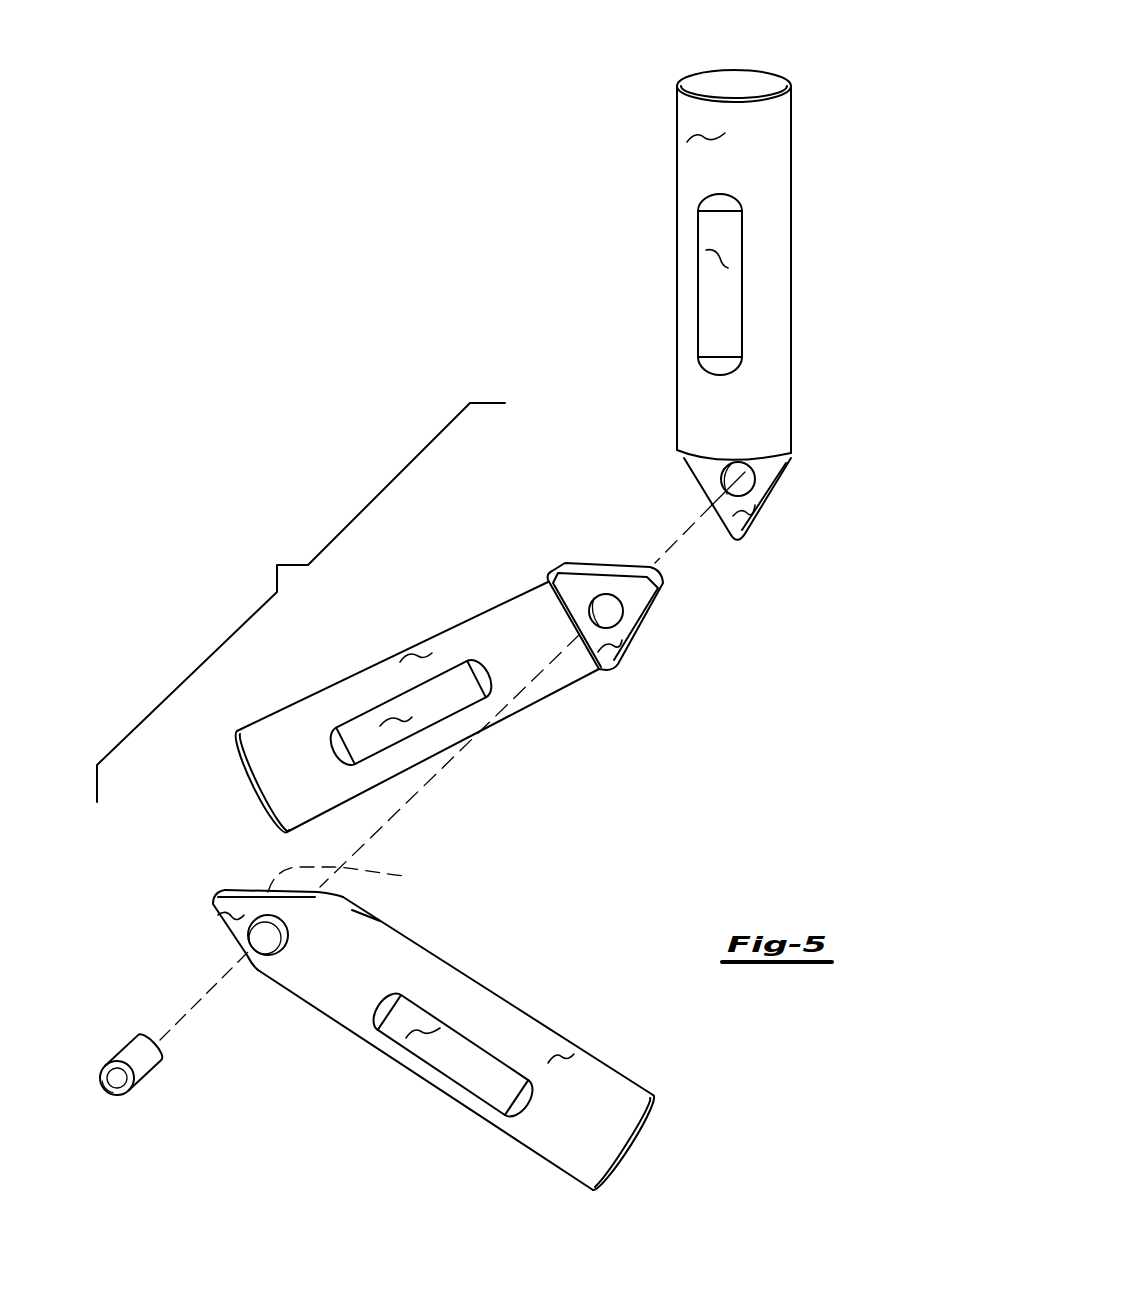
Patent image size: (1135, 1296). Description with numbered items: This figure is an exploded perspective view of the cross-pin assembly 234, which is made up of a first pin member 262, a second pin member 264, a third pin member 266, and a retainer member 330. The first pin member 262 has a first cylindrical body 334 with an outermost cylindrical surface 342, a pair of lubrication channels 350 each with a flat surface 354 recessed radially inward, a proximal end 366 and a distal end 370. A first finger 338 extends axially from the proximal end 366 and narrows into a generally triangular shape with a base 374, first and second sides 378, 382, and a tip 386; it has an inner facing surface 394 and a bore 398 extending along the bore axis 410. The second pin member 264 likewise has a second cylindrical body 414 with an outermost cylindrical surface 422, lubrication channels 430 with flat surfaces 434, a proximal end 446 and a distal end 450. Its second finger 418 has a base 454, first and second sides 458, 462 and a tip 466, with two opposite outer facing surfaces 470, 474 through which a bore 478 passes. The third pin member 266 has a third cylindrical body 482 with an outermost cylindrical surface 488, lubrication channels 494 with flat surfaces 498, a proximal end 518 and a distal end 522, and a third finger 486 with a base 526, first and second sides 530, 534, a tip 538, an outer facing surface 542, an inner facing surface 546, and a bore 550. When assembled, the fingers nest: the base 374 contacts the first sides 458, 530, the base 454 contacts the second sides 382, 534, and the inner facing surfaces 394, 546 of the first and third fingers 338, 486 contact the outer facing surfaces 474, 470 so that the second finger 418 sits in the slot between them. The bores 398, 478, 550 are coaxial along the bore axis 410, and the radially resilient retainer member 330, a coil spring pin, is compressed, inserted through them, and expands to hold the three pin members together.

The cross-pin assembly 234 is at (301, 602).
The first pin member 262 is at (677, 123).
The second pin member 264 is at (318, 705).
The third pin member 266 is at (608, 1087).
The retainer member 330 is at (147, 1065).
The first cylindrical body 334 is at (791, 117).
The first finger 338 is at (774, 500).
The outermost cylindrical surface 342 is at (705, 137).
The lubrication channels 350 is at (742, 237).
The flat surface 354 is at (712, 256).
The proximal end 366 is at (777, 459).
The distal end 370 is at (758, 83).
The base 374 is at (791, 461).
The first side 378 is at (775, 497).
The second side 382 is at (687, 467).
The tip 386 is at (740, 541).
The inner facing surface 394 is at (745, 513).
The bore 398 is at (757, 467).
The bore axis 410 is at (193, 1005).
The second cylindrical body 414 is at (260, 737).
The second finger 418 is at (623, 633).
The outermost cylindrical surface 422 is at (420, 655).
The lubrication channels 430 is at (443, 726).
The flat surface 434 is at (393, 728).
The proximal end 446 is at (563, 566).
The distal end 450 is at (238, 768).
The base 454 is at (585, 663).
The first side 458 is at (578, 563).
The second side 462 is at (662, 588).
The tip 466 is at (648, 613).
The outer facing surface 470 is at (615, 652).
The outer facing surface 474 is at (613, 560).
The bore 478 is at (562, 577).
The third cylindrical body 482 is at (545, 1138).
The third finger 486 is at (283, 905).
The outermost cylindrical surface 488 is at (555, 1057).
The lubrication channels 494 is at (470, 1092).
The flat surface 498 is at (420, 1033).
The proximal end 518 is at (350, 905).
The distal end 522 is at (640, 1128).
The base 526 is at (343, 900).
The first side 530 is at (245, 890).
The second side 534 is at (236, 948).
The tip 538 is at (214, 903).
The outer facing surface 542 is at (224, 920).
The inner facing surface 546 is at (356, 878).
The bore 550 is at (268, 956).